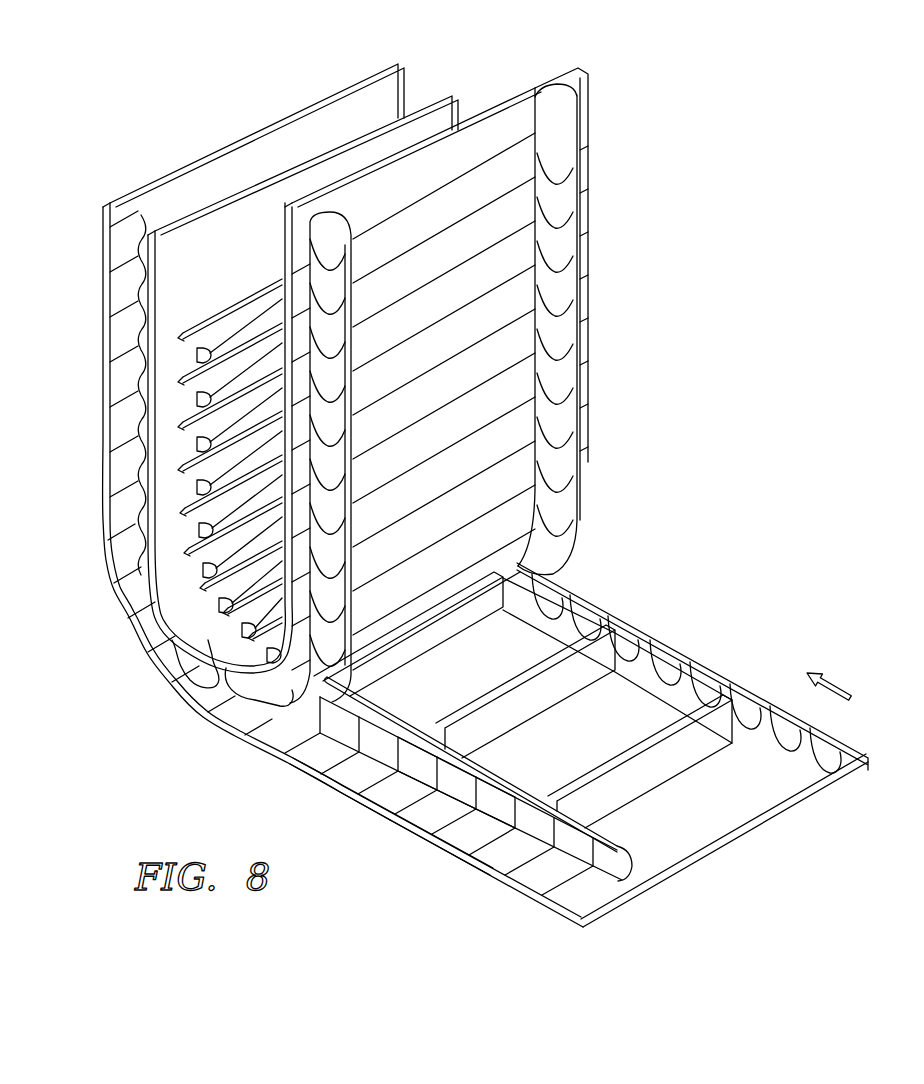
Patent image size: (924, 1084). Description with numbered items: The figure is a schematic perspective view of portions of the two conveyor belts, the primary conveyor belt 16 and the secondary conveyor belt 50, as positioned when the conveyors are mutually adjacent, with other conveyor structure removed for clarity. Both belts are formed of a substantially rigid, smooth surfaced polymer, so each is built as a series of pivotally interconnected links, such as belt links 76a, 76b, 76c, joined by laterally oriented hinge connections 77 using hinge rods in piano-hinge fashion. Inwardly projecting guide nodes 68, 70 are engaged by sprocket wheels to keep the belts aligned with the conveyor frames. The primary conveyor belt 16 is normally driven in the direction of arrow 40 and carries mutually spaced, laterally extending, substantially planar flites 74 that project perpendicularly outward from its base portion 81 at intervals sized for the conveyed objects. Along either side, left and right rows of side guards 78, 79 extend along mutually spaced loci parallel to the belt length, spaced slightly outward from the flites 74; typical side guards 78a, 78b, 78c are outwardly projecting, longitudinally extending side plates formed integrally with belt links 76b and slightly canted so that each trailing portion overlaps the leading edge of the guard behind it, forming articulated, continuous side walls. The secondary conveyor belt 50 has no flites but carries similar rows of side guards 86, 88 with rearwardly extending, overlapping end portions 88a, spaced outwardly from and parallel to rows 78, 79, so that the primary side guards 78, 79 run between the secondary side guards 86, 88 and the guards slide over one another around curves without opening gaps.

The primary conveyor belt 16 is at (561, 724).
The arrow 40 is at (836, 687).
The secondary conveyor belt 50 is at (603, 487).
The guide nodes 68 is at (262, 335).
The guide nodes 70 is at (200, 347).
The flites 74 is at (723, 724).
The belt link 76a is at (300, 771).
The belt link 76b is at (347, 797).
The belt link 76c is at (383, 812).
The hinge connections 77 is at (244, 733).
The left row of side guards 78 is at (622, 853).
The side guard 78a is at (415, 753).
The side guard 78b is at (460, 793).
The side guard 78c is at (480, 782).
The right row of side guards 79 is at (781, 762).
The base portion 81 is at (676, 851).
The row of side guards 86 is at (355, 262).
The row of side guards 88 is at (557, 321).
The overlapping end portions 88a is at (562, 193).